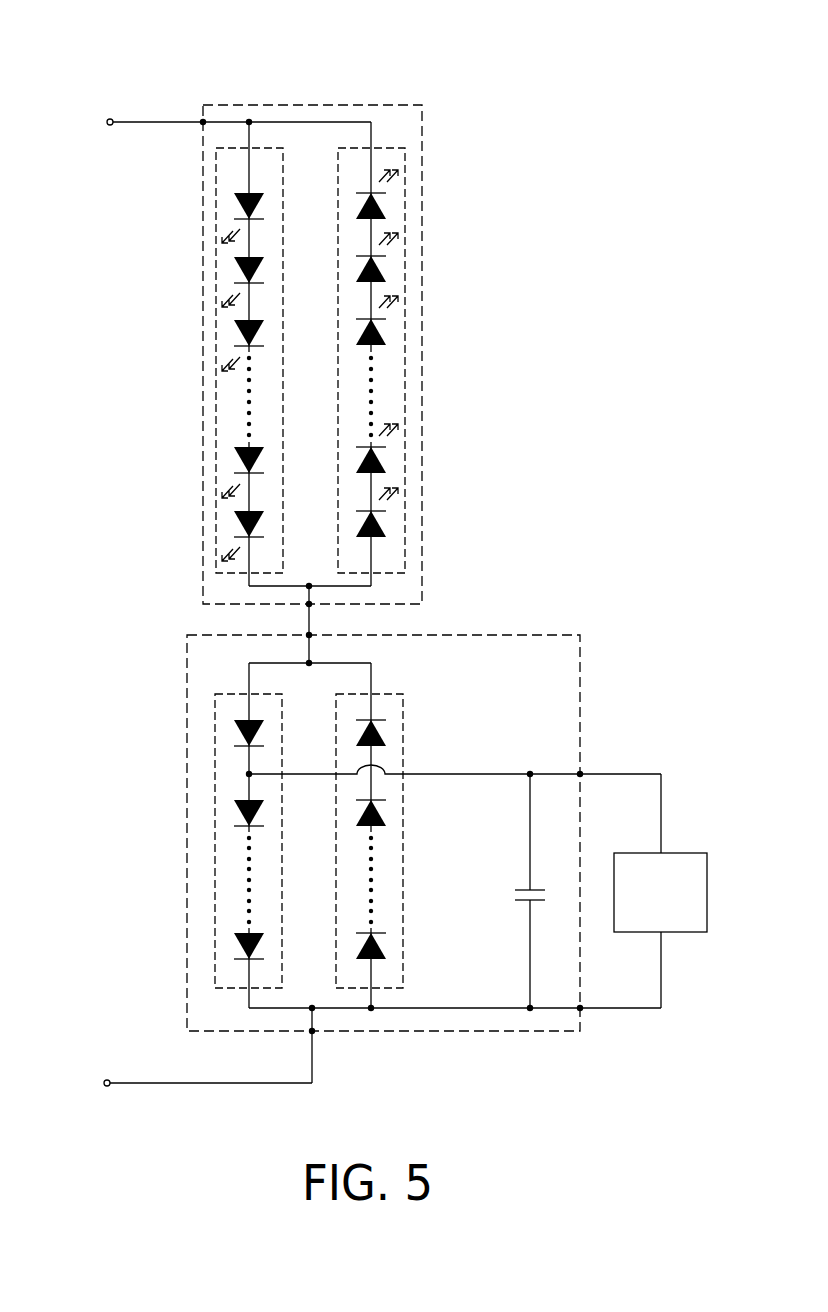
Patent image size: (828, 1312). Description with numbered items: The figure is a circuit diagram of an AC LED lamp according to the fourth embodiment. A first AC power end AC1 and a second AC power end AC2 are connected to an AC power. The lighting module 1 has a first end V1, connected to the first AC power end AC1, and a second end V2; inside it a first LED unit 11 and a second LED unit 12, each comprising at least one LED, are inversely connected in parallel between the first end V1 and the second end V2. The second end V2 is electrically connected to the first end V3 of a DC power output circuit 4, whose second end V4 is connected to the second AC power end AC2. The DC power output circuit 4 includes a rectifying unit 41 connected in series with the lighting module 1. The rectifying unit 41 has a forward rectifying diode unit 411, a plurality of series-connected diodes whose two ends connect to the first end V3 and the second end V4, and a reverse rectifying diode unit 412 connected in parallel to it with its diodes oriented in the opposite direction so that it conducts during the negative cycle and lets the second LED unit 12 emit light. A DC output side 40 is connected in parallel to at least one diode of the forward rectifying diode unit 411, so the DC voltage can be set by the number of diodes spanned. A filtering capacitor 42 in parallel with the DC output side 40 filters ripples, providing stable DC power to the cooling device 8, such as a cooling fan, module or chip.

The lighting module 1 is at (422, 358).
The first LED unit 11 is at (263, 140).
The second LED unit 12 is at (360, 140).
The DC power output circuit 4 is at (488, 632).
The rectifying unit 41 is at (82, 617).
The forward rectifying diode unit 411 is at (213, 723).
The reverse rectifying diode unit 412 is at (342, 692).
The DC output side 40 is at (580, 774).
The filtering capacitor 42 is at (538, 902).
The cooling device 8 is at (682, 863).
The first end V1 is at (203, 122).
The second end V2 is at (308, 604).
The first end V3 is at (308, 635).
The second end V4 is at (315, 1033).
The first AC power end AC1 is at (232, 103).
The second AC power end AC2 is at (197, 1059).